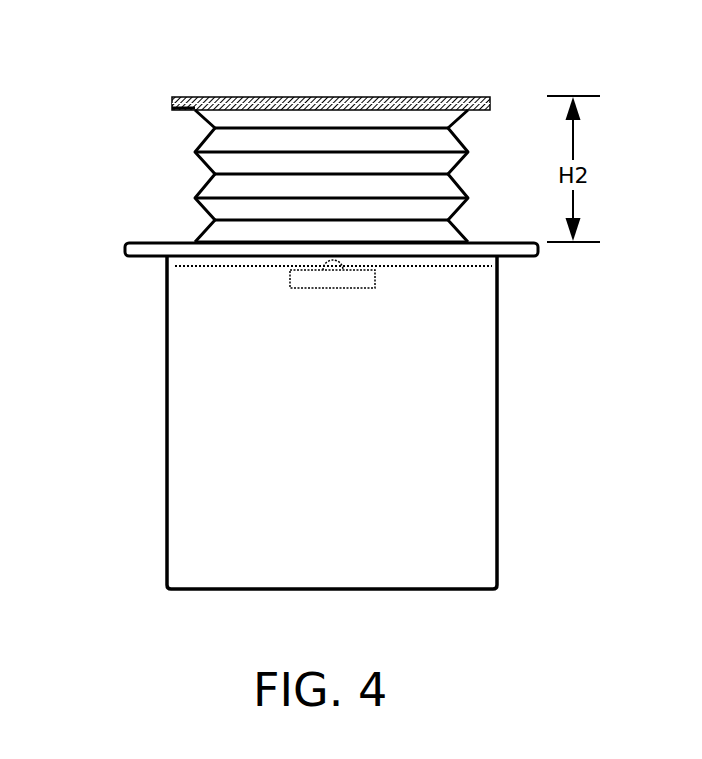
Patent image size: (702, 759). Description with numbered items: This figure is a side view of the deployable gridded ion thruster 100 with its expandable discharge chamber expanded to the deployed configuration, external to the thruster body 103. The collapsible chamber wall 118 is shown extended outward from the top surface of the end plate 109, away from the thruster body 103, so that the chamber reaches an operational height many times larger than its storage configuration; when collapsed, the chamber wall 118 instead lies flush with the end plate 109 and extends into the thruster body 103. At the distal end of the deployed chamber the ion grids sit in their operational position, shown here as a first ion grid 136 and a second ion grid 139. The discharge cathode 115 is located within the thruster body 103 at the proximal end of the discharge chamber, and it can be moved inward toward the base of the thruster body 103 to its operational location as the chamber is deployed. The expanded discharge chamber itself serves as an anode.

The deployable gridded ion thruster 100 is at (135, 98).
The second ion grid 139 is at (213, 97).
The first ion grid 136 is at (182, 111).
The chamber wall 118 is at (208, 182).
The end plate 109 is at (135, 243).
The thruster body 103 is at (498, 420).
The cathode 115 is at (333, 290).